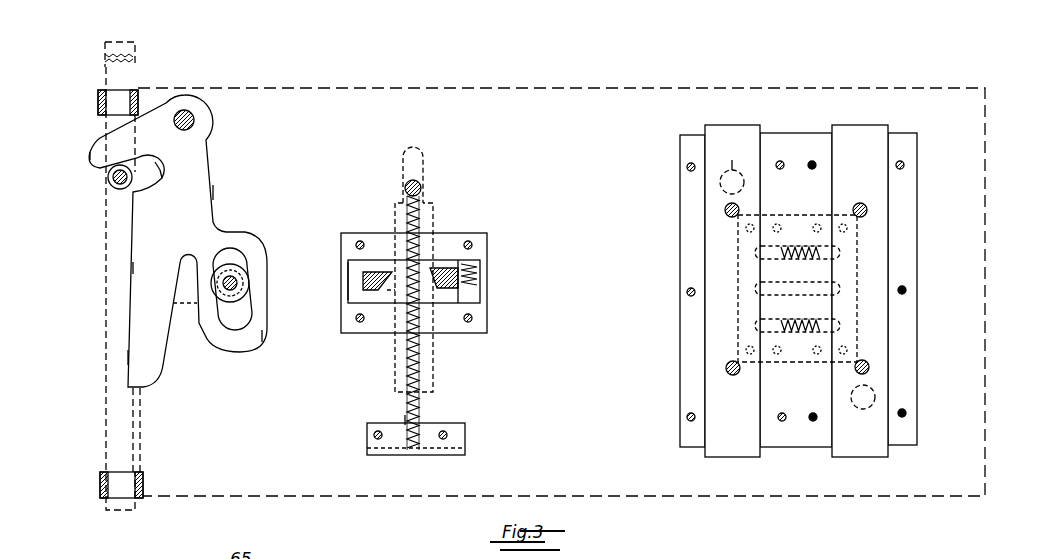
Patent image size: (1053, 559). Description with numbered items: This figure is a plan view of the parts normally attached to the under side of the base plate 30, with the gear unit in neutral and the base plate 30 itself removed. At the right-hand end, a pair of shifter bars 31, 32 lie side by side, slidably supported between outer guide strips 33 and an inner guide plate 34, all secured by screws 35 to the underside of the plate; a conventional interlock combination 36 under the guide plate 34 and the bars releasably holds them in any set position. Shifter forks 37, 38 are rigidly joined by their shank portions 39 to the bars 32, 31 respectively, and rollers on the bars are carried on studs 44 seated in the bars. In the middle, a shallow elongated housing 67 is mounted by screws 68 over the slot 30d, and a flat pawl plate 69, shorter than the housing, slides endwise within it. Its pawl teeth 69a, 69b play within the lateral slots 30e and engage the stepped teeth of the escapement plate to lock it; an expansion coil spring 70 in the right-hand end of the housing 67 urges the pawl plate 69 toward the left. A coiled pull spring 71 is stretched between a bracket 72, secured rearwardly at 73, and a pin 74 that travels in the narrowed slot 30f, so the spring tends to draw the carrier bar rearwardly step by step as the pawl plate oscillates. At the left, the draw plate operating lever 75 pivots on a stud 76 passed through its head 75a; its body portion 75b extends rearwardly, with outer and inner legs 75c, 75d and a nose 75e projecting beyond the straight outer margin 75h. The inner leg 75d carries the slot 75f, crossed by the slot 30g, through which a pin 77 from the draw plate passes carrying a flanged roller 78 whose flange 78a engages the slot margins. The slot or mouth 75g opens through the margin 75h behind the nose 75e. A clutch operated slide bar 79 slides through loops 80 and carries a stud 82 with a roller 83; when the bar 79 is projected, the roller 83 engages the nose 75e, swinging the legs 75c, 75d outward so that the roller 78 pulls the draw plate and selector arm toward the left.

The base plate 30 is at (456, 86).
The elongated slot 30d is at (437, 389).
The slots 30e is at (355, 378).
The narrowed slot 30f is at (405, 151).
The elongated slot 30g is at (185, 303).
The shifter bar 31 is at (855, 123).
The shifter bar 32 is at (722, 124).
The outer guide strips 33 is at (690, 135).
The inner guide plate 34 is at (815, 133).
The screws 35 is at (811, 162).
The interlock combination 36 is at (737, 322).
The shifter fork 37 is at (745, 187).
The shifter fork 38 is at (862, 410).
The shank portions 39 is at (851, 396).
The studs 44 is at (866, 212).
The housing 67 is at (489, 234).
The screws 68 is at (359, 241).
The pawl plate 69 is at (355, 258).
The pawl tooth 69a is at (390, 275).
The pawl tooth 69b is at (432, 268).
The expansion coil spring 70 is at (470, 272).
The coiled pull spring 71 is at (405, 420).
The bracket 72 is at (372, 456).
The bracket securing point 73 is at (375, 437).
The pin 74 is at (418, 184).
The draw plate operating lever 75 is at (209, 152).
The head 75a is at (186, 95).
The body portion 75b is at (214, 192).
The outer leg 75c is at (128, 357).
The inner leg 75d is at (263, 342).
The nose 75e is at (90, 158).
The slot 75f is at (246, 305).
The slot or mouth 75g is at (161, 177).
The outer margin 75h is at (133, 268).
The stud 76 is at (189, 116).
The stud or pin 77 is at (233, 282).
The flanged roller 78 is at (244, 270).
The flange 78a is at (250, 283).
The clutch operated slide bar 79 is at (118, 510).
The loops 80 is at (98, 97).
The stud 82 is at (117, 179).
The roller 83 is at (157, 170).